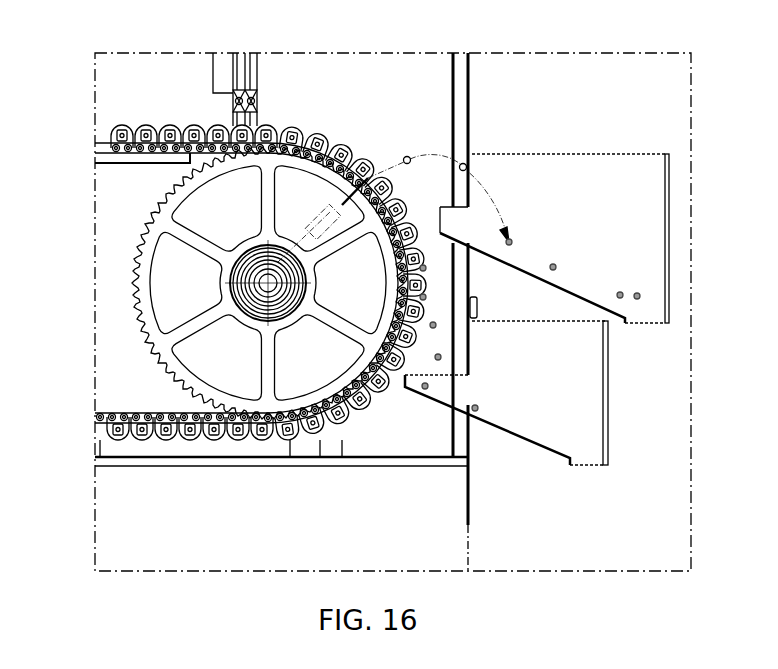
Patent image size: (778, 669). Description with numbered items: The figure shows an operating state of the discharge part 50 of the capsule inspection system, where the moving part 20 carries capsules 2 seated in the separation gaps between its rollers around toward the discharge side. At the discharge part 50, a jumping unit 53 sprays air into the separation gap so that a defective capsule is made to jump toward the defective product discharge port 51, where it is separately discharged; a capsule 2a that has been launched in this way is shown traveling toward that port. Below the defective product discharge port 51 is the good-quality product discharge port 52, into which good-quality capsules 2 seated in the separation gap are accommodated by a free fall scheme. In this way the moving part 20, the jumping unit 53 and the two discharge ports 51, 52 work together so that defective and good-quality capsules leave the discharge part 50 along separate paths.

The moving part 20 is at (125, 130).
The discharge part 50 is at (645, 118).
The capsules overlapping each other 2a is at (512, 242).
The defective product discharge port 51 is at (669, 235).
The good-quality product discharge port 52 is at (610, 402).
The jumping unit 53 is at (340, 252).
The capsules 2 is at (478, 408).